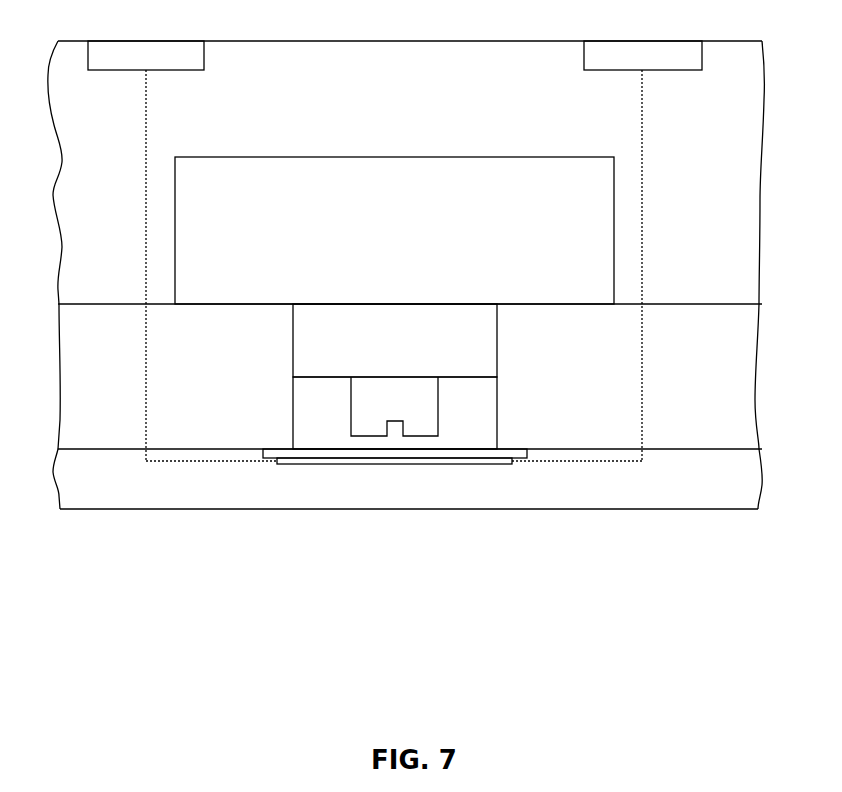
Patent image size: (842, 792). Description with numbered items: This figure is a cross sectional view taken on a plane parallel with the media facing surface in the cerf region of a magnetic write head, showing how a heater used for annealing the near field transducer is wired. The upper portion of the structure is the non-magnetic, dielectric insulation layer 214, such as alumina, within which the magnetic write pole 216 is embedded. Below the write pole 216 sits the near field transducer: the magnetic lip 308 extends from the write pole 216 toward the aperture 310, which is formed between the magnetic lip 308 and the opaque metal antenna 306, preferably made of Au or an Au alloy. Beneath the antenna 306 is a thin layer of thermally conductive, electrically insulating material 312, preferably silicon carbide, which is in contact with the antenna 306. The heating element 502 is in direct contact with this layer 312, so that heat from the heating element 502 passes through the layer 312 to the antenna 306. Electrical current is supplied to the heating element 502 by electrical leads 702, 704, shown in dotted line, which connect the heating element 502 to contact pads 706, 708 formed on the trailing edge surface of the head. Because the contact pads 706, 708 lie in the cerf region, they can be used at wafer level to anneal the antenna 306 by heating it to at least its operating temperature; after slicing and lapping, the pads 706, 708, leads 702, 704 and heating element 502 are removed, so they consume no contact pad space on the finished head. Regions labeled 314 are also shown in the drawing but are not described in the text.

The dielectric insulation layer 214 is at (452, 114).
The magnetic write pole 216 is at (441, 241).
The opaque metal antenna 306 is at (312, 424).
The magnetic lip 308 is at (422, 345).
The aperture 310 is at (422, 399).
The thermally conductive, electrically insulating layer 312 is at (373, 452).
The encapsulant 314 is at (259, 361).
The heating element 502 is at (410, 461).
The electrical lead 702 is at (643, 357).
The electrical lead 704 is at (146, 350).
The contact pad 706 is at (641, 52).
The contact pad 708 is at (143, 49).